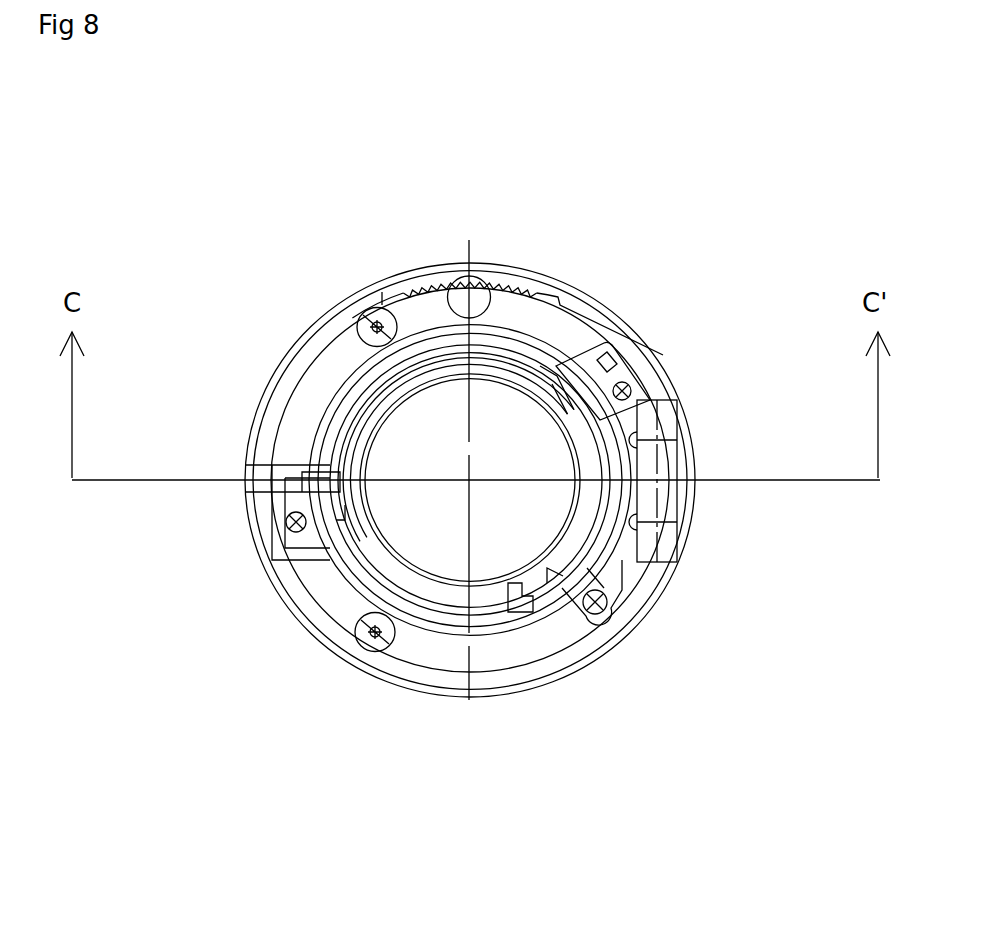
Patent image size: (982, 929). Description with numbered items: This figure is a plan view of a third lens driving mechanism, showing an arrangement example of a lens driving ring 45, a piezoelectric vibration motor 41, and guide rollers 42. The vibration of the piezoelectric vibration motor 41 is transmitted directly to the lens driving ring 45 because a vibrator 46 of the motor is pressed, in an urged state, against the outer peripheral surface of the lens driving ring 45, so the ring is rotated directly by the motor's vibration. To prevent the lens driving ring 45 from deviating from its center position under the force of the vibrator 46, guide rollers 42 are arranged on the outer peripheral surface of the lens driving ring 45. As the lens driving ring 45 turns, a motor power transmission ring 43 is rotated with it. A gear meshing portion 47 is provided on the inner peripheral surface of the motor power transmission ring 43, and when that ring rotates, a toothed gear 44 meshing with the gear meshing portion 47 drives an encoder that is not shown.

The piezoelectric vibration motor 41 is at (660, 400).
The guide rollers 42 is at (358, 322).
The motor power transmission ring 43 is at (588, 292).
The toothed gear 44 is at (442, 278).
The lens driving ring 45 is at (600, 334).
The vibrator 46 is at (621, 560).
The gear meshing portion 47 is at (497, 278).